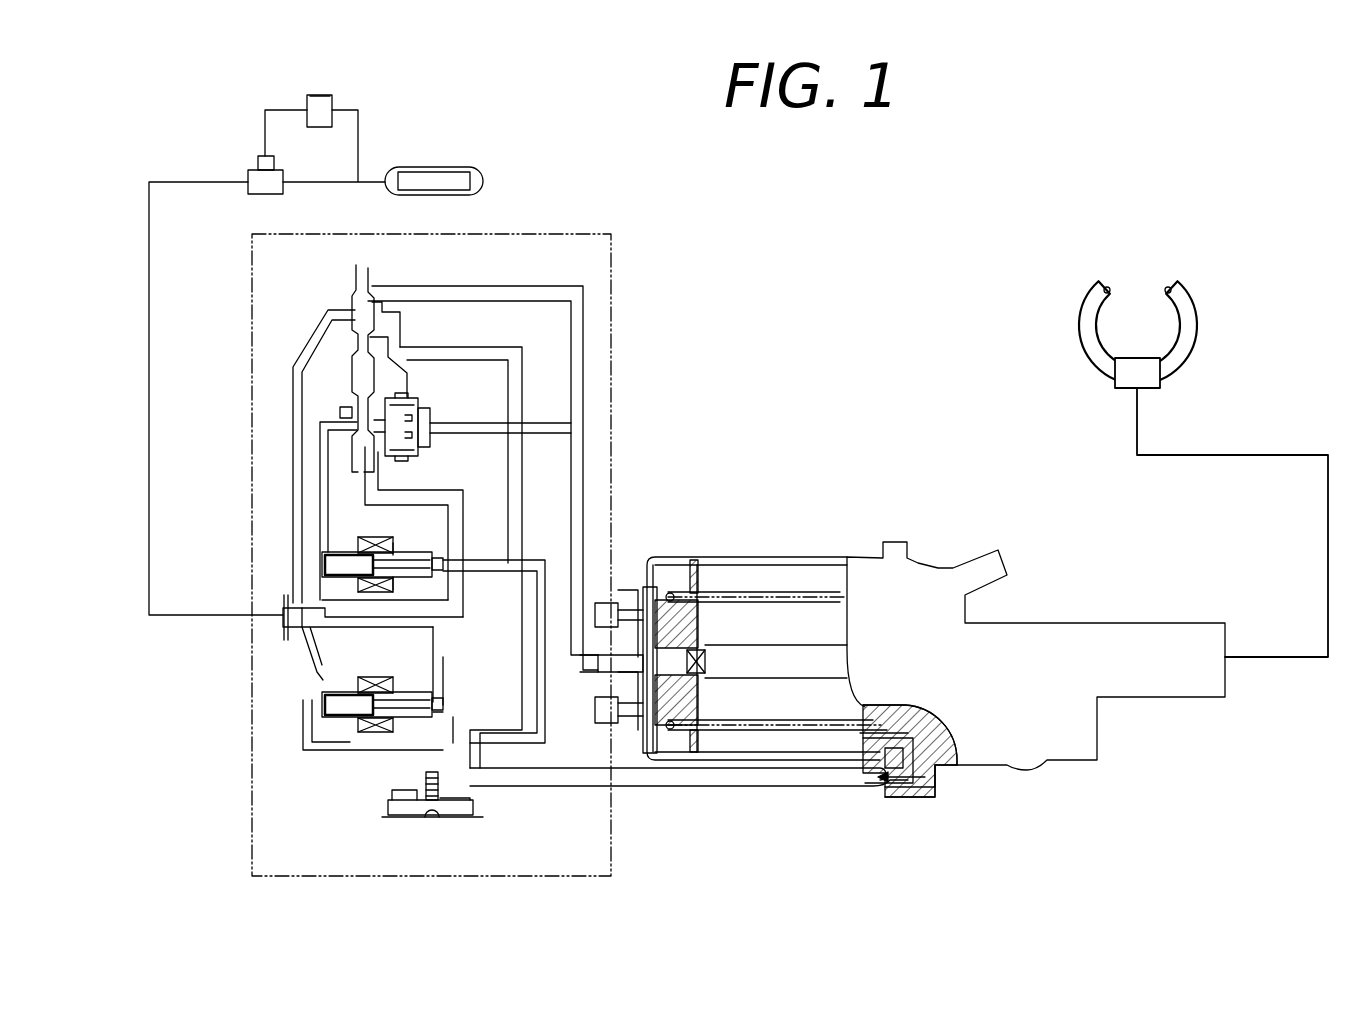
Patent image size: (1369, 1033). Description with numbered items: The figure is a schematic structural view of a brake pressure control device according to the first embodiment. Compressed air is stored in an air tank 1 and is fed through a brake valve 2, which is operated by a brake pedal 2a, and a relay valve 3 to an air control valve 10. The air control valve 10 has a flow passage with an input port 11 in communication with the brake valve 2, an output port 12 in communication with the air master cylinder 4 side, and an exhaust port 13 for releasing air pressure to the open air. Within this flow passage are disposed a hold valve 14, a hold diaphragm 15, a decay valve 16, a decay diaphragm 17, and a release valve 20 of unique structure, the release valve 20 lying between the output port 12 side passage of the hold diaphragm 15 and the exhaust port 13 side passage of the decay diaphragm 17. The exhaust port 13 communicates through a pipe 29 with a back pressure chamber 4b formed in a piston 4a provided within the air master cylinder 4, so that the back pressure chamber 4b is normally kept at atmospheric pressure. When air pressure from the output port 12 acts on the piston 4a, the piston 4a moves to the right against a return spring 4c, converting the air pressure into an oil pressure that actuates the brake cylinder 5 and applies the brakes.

The air tank 1 is at (455, 172).
The brake valve 2 is at (335, 104).
The brake pedal 2a is at (312, 96).
The relay valve 3 is at (250, 172).
The air master cylinder 4 is at (818, 557).
The piston 4a is at (690, 628).
The back pressure chamber 4b is at (770, 710).
The return spring 4c is at (822, 740).
The brake cylinder 5 is at (1158, 372).
The air control valve 10 is at (613, 287).
The input port 11 is at (288, 618).
The output port 12 is at (585, 452).
The exhaust port 13 is at (460, 815).
The hold valve 14 is at (378, 537).
The hold diaphragm 15 is at (352, 402).
The decay valve 16 is at (388, 677).
The decay diaphragm 17 is at (353, 302).
The release valve 20 is at (432, 445).
The pipe 29 is at (665, 787).